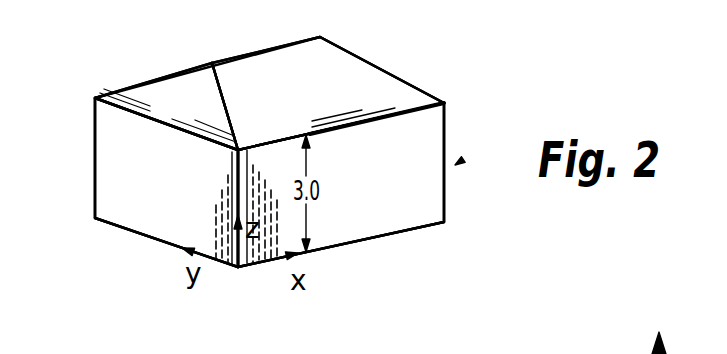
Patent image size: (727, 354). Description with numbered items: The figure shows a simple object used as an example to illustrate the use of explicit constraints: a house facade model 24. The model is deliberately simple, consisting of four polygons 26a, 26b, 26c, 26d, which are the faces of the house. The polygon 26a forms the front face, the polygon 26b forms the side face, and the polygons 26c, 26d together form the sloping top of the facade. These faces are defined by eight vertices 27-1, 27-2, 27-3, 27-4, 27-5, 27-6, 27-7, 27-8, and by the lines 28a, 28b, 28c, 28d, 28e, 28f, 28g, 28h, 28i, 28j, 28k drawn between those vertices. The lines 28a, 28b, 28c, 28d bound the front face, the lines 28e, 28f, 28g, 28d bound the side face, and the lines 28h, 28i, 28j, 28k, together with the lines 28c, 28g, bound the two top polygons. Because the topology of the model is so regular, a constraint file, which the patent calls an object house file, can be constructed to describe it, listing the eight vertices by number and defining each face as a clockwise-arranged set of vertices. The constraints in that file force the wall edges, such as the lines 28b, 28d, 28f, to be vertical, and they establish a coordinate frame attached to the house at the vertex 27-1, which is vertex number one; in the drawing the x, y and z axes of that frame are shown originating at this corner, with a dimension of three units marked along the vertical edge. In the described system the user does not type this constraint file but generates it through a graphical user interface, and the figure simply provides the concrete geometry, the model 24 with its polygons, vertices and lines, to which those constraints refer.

The house facade model 24 is at (460, 162).
The polygon 26a is at (376, 207).
The polygon 26b is at (147, 193).
The polygon 26c is at (328, 95).
The polygon 26d is at (197, 113).
The line 28a is at (352, 243).
The line 28b is at (446, 190).
The line 28c is at (410, 113).
The line 28d is at (232, 203).
The line 28e is at (147, 237).
The line 28f is at (95, 160).
The line 28g is at (176, 128).
The line 28h is at (227, 112).
The line 28i is at (118, 89).
The line 28j is at (257, 54).
The line 28k is at (388, 72).
The vertex 27-1 is at (238, 268).
The vertex 27-2 is at (444, 222).
The vertex 27-3 is at (444, 103).
The vertex 27-4 is at (240, 145).
The vertex 27-5 is at (95, 98).
The vertex 27-6 is at (95, 218).
The vertex 27-7 is at (212, 63).
The vertex 27-8 is at (320, 37).